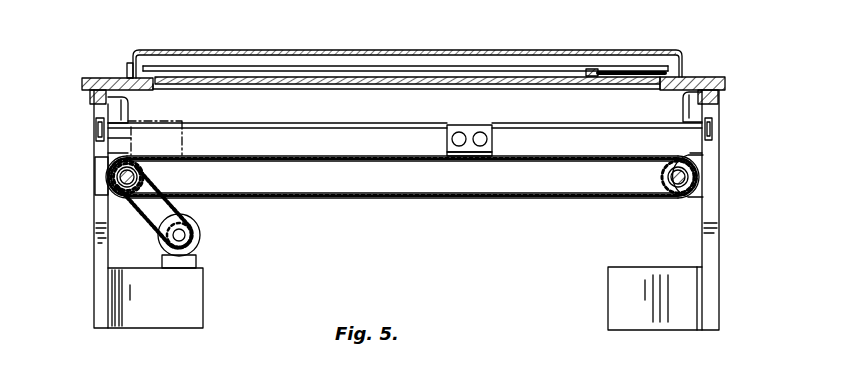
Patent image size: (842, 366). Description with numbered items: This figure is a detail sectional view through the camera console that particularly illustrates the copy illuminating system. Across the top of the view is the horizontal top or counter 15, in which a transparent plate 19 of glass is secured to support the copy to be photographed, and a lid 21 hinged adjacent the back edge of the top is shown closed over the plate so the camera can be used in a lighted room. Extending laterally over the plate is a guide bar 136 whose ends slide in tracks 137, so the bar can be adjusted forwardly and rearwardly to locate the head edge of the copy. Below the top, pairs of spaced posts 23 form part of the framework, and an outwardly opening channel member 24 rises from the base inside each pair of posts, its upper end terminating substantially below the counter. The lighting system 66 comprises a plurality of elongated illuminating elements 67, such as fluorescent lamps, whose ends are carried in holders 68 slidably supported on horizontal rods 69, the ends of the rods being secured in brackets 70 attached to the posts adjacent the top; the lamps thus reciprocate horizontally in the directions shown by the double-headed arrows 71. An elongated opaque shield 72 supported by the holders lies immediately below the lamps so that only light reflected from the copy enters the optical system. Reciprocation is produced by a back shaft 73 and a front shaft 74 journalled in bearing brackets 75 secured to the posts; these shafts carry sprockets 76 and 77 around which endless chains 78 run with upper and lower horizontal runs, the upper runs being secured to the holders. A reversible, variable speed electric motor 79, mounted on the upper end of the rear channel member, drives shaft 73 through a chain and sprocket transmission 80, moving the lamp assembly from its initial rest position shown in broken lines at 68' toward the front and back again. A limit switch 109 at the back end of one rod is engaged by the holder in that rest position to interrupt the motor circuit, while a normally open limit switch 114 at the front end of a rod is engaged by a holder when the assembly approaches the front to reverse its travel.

The top or counter 15 is at (702, 77).
The transparent plate 19 is at (398, 82).
The lid 21 is at (597, 51).
The posts 23 is at (97, 257).
The channel member 24 is at (125, 300).
The lighting system 66 is at (482, 202).
The elongated illuminating elements 67 is at (481, 132).
The holders 68 is at (455, 130).
The holder in initial position 68' is at (184, 130).
The horizontal rods 69 is at (306, 125).
The brackets 70 is at (100, 140).
The double-headed arrows 71 is at (402, 148).
The opaque shield 72 is at (402, 177).
The shaft 73 is at (118, 181).
The shaft 74 is at (692, 178).
The bearing brackets 75 is at (106, 193).
The sprockets 76 is at (144, 175).
The sprockets 77 is at (660, 180).
The endless chains 78 is at (314, 198).
The reversible electric motor 79 is at (201, 236).
The chain and sprocket transmission 80 is at (147, 224).
The limit switch 109 is at (112, 110).
The limit switch 114 is at (712, 111).
The guide bar 136 is at (592, 70).
The tracks 137 is at (648, 71).